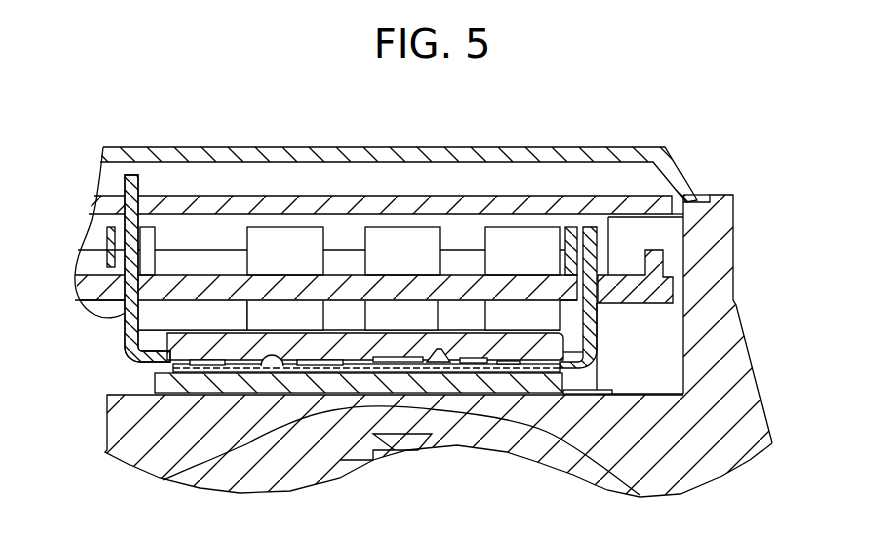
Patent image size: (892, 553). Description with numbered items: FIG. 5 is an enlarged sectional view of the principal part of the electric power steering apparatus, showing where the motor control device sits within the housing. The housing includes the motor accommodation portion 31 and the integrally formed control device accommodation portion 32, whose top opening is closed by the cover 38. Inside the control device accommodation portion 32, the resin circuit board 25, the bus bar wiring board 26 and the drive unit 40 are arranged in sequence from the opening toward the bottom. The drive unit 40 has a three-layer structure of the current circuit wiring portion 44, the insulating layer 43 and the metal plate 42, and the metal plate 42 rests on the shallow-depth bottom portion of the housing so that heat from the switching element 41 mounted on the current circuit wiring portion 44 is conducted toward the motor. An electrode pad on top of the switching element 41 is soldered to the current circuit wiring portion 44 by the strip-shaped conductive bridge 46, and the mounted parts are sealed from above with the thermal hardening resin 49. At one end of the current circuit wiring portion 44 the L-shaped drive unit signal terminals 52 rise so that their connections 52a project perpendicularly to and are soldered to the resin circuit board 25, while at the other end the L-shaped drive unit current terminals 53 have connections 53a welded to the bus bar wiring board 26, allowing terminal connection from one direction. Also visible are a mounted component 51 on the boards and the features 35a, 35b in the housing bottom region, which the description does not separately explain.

The resin circuit board 25 is at (258, 200).
The bus bar wiring board 26 is at (516, 284).
The motor accommodation portion 31 is at (722, 283).
The control device accommodation portion 32 is at (745, 455).
The engaging portion 35a is at (205, 462).
The support portion 35b is at (560, 393).
The cover 38 is at (607, 157).
The drive unit 40 is at (128, 355).
The switching element 41 is at (392, 372).
The metal plate 42 is at (157, 384).
The insulating layer 43 is at (318, 372).
The current circuit wiring portion 44 is at (287, 372).
The strip-shaped conductive bridge 46 is at (440, 362).
The thermal hardening resin 49 is at (495, 372).
The electronic component 51 is at (400, 232).
The drive unit signal terminals 52 is at (85, 317).
The connections 52a is at (112, 218).
The drive unit current terminals 53 is at (598, 330).
The connections 53a is at (590, 258).